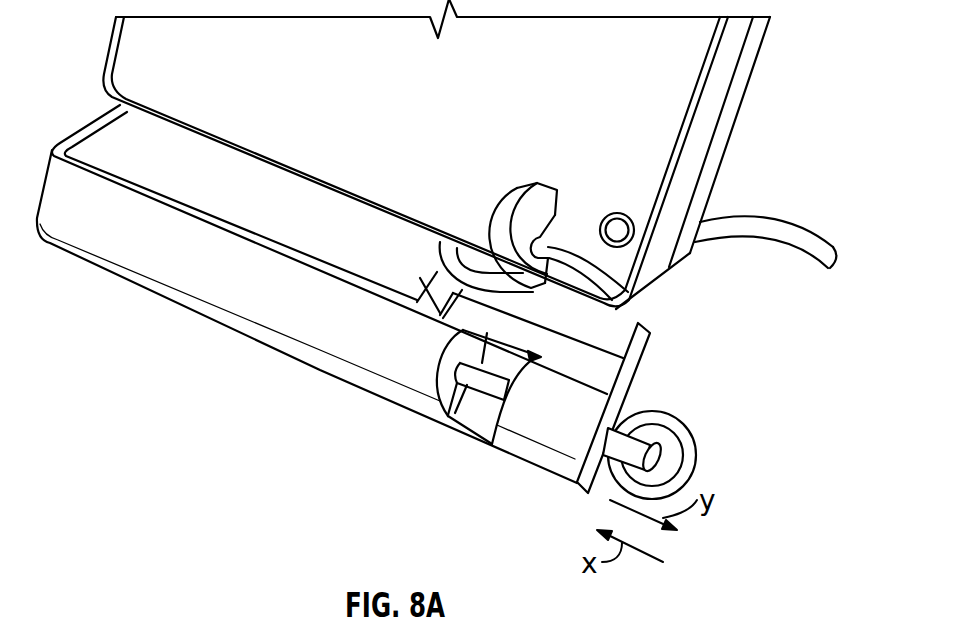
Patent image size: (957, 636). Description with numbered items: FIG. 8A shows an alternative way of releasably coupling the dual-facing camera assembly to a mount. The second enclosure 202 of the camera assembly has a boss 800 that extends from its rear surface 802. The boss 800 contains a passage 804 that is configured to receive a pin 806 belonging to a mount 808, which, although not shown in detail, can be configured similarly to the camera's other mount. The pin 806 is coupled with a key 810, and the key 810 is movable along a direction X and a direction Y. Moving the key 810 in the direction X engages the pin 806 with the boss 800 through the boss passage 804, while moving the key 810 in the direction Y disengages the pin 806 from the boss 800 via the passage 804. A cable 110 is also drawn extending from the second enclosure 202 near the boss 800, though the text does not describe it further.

The cable 110 is at (790, 233).
The second enclosure 202 is at (722, 92).
The boss 800 is at (527, 190).
The rear surface 802 is at (645, 183).
The passage 804 is at (633, 293).
The pin 806 is at (485, 388).
The mount 808 is at (384, 360).
The key 810 is at (667, 423).